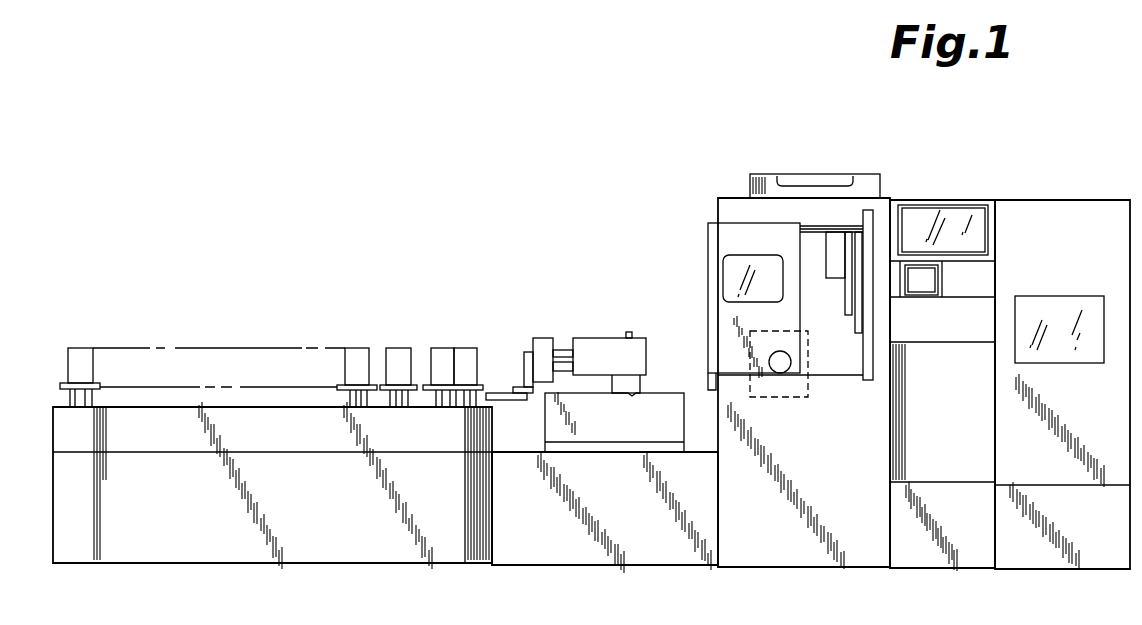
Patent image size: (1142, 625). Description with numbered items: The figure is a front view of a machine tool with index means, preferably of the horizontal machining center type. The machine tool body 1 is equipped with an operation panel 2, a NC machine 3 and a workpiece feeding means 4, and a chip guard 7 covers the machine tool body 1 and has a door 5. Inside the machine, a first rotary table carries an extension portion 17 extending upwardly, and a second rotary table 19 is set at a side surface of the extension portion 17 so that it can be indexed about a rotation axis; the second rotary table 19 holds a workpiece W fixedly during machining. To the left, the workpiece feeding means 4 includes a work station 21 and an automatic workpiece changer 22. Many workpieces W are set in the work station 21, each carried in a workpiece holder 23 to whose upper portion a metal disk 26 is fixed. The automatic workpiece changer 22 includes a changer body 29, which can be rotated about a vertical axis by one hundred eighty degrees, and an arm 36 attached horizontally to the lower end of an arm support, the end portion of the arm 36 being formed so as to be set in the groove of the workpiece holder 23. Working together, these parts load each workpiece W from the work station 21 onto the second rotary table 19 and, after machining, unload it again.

The machine tool body 1 is at (793, 160).
The operation panel 2 is at (976, 216).
The NC machine 3 is at (1110, 214).
The workpiece feeding means 4 is at (351, 316).
The door 5 is at (712, 243).
The chip guard 7 is at (851, 207).
The extension portion 17 is at (808, 333).
The second rotary table 19 is at (790, 368).
The work station 21 is at (273, 534).
The automatic workpiece changer 22 is at (600, 331).
The workpiece holder 23 is at (396, 400).
The metal disk 26 is at (424, 350).
The changer body 29 is at (636, 345).
The arm 36 is at (501, 389).
The workpiece W is at (463, 350).